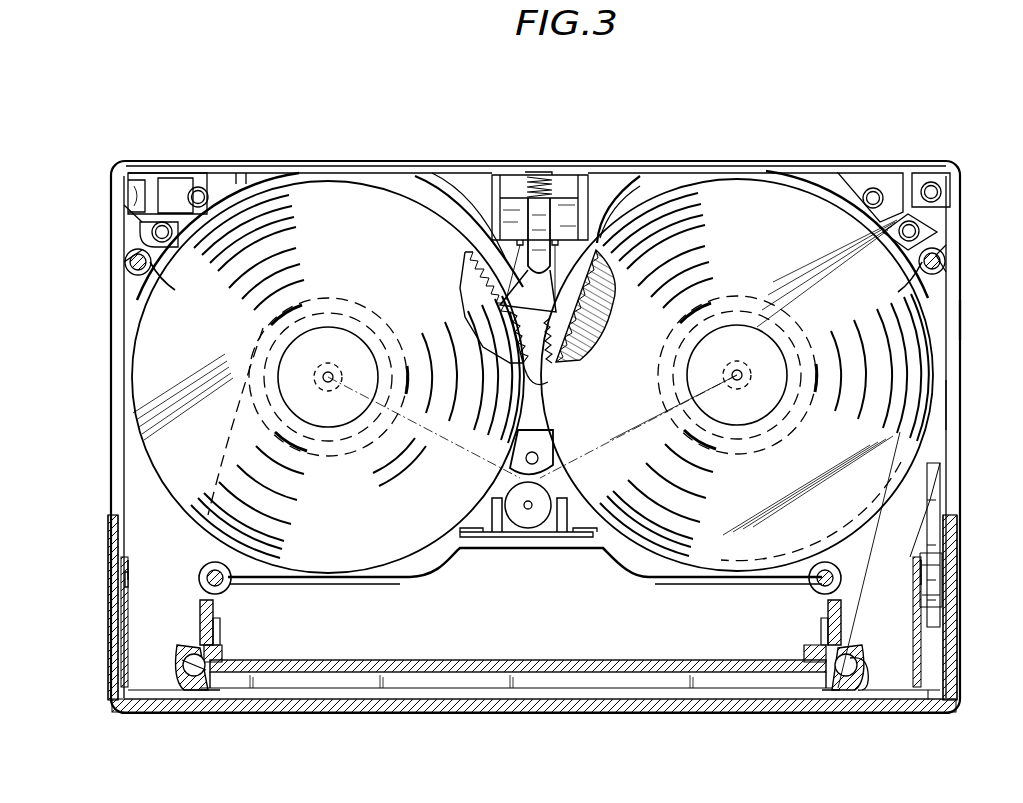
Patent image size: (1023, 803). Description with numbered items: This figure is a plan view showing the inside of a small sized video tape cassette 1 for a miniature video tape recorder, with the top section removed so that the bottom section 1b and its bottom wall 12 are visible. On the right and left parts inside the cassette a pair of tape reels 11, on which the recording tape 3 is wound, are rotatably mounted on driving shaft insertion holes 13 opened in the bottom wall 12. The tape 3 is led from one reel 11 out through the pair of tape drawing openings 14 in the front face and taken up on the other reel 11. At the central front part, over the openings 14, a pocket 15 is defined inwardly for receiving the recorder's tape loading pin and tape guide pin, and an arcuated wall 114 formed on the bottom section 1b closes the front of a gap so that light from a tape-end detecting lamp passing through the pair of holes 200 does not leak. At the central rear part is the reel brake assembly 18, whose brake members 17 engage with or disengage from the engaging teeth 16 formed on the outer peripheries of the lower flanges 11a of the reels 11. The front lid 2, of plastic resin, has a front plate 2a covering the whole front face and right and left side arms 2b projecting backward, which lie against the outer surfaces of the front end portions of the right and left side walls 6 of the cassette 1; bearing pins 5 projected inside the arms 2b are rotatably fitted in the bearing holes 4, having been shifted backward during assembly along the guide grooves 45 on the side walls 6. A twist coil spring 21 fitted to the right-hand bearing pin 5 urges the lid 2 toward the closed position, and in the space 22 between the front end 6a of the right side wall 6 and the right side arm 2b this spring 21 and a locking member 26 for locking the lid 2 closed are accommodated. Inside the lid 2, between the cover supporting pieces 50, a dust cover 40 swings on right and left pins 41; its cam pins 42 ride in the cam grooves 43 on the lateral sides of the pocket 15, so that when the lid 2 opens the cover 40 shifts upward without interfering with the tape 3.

The tape cassette 1 is at (858, 158).
The bottom section 1b is at (960, 318).
The front lid 2 is at (434, 714).
The front plate 2a is at (670, 713).
The side arms 2b is at (108, 572).
The recording tape 3 is at (560, 690).
The bearing holes 4 is at (128, 568).
The bearing pins 5 is at (130, 588).
The side walls 6 is at (960, 406).
The front end of side wall 6a is at (869, 561).
The tape reels 11 is at (330, 195).
The lower flanges 11a is at (474, 290).
The bottom wall 12 is at (806, 176).
The driving shaft insertion holes 13 is at (348, 296).
The tape drawing openings 14 is at (160, 676).
The pocket 15 is at (500, 690).
The engaging teeth 16 is at (510, 334).
The brake members 17 is at (505, 306).
The reel brake assembly 18 is at (559, 194).
The twist coil spring 21 is at (945, 582).
The space 22 is at (932, 686).
The locking member 26 is at (945, 480).
The dust cover 40 is at (340, 690).
The pins 41 is at (222, 654).
The cam pins 42 is at (216, 636).
The cam grooves 43 is at (214, 622).
The guide grooves 45 is at (108, 632).
The cover supporting pieces 50 is at (220, 690).
The arcuated wall 114 is at (536, 500).
The holes 200 is at (490, 536).